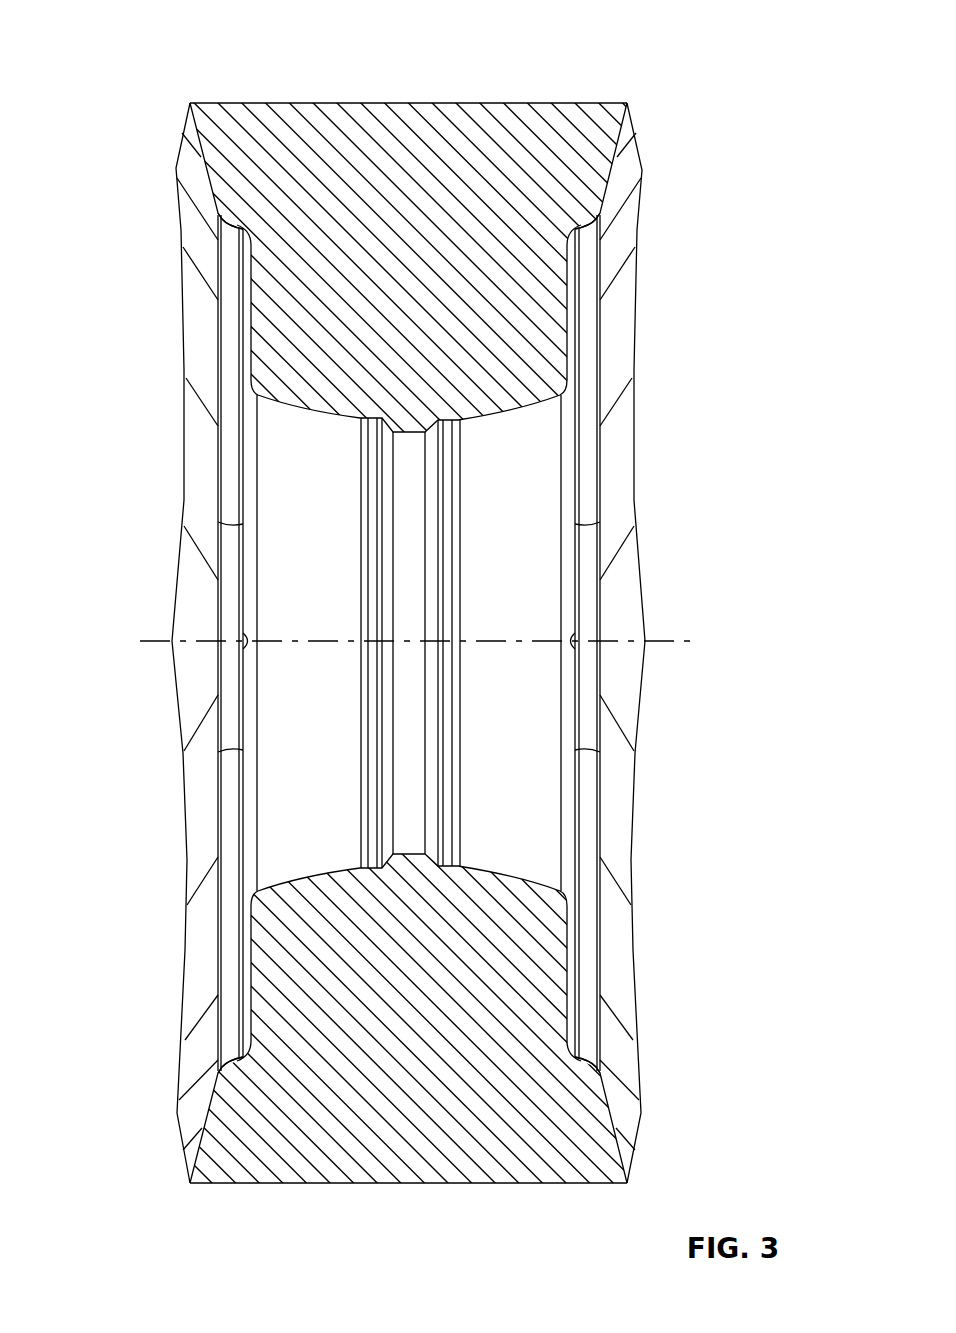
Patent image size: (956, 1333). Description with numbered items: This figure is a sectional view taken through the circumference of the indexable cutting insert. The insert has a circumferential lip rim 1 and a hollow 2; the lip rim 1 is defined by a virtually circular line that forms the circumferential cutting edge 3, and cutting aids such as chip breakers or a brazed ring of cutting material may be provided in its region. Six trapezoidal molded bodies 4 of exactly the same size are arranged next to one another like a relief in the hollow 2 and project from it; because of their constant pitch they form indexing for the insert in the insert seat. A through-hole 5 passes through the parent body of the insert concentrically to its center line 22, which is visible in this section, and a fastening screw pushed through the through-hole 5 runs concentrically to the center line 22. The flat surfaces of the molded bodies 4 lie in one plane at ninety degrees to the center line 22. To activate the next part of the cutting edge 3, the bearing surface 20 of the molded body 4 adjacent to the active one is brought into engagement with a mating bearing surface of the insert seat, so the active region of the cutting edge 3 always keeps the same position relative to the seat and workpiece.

The lip rim 1 is at (632, 1148).
The hollow 2 is at (230, 670).
The cutting edge 3 is at (626, 103).
The molded bodies 4 is at (587, 470).
The through-hole 5 is at (513, 673).
The bearing surface 20 is at (236, 228).
The center line 22 is at (693, 641).